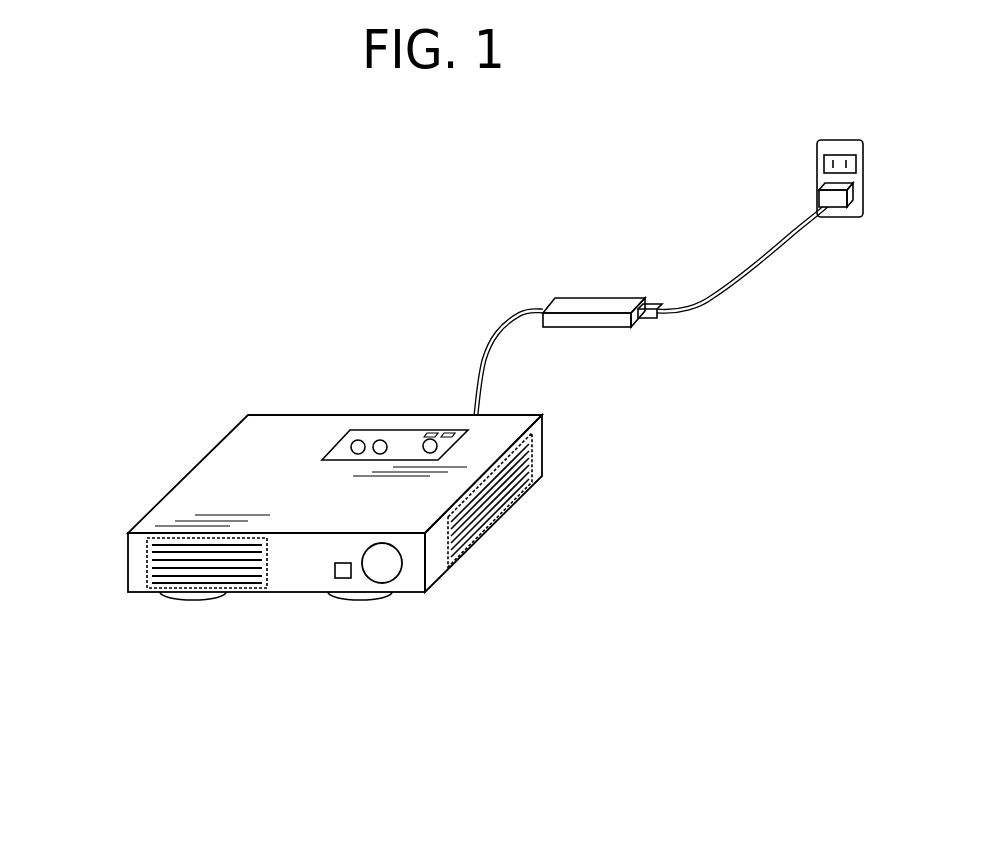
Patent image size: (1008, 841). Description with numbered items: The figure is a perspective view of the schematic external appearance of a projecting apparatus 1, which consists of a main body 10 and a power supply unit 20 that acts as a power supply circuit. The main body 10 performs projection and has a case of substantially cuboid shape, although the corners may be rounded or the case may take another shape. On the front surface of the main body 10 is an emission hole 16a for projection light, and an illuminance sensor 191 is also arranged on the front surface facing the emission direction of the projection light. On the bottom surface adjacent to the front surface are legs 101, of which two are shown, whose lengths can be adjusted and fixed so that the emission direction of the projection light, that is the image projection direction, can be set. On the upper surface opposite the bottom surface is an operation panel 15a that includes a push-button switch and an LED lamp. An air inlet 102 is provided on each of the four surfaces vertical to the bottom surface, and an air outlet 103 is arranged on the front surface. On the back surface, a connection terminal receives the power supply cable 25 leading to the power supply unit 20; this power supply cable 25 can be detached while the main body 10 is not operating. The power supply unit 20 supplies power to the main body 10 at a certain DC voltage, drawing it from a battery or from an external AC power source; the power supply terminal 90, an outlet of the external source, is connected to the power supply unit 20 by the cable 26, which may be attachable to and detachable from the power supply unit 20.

The projecting apparatus 1 is at (503, 230).
The main body 10 is at (277, 445).
The operation panel 15a is at (395, 430).
The emission hole 16a is at (390, 563).
The power supply unit 20 is at (598, 297).
The power supply cable 25 is at (487, 376).
The cable 26 is at (752, 268).
The power supply terminal 90 is at (817, 155).
The legs 101 is at (276, 657).
The air inlet 102 is at (532, 470).
The air outlet 103 is at (150, 565).
The illuminance sensor 191 is at (335, 563).